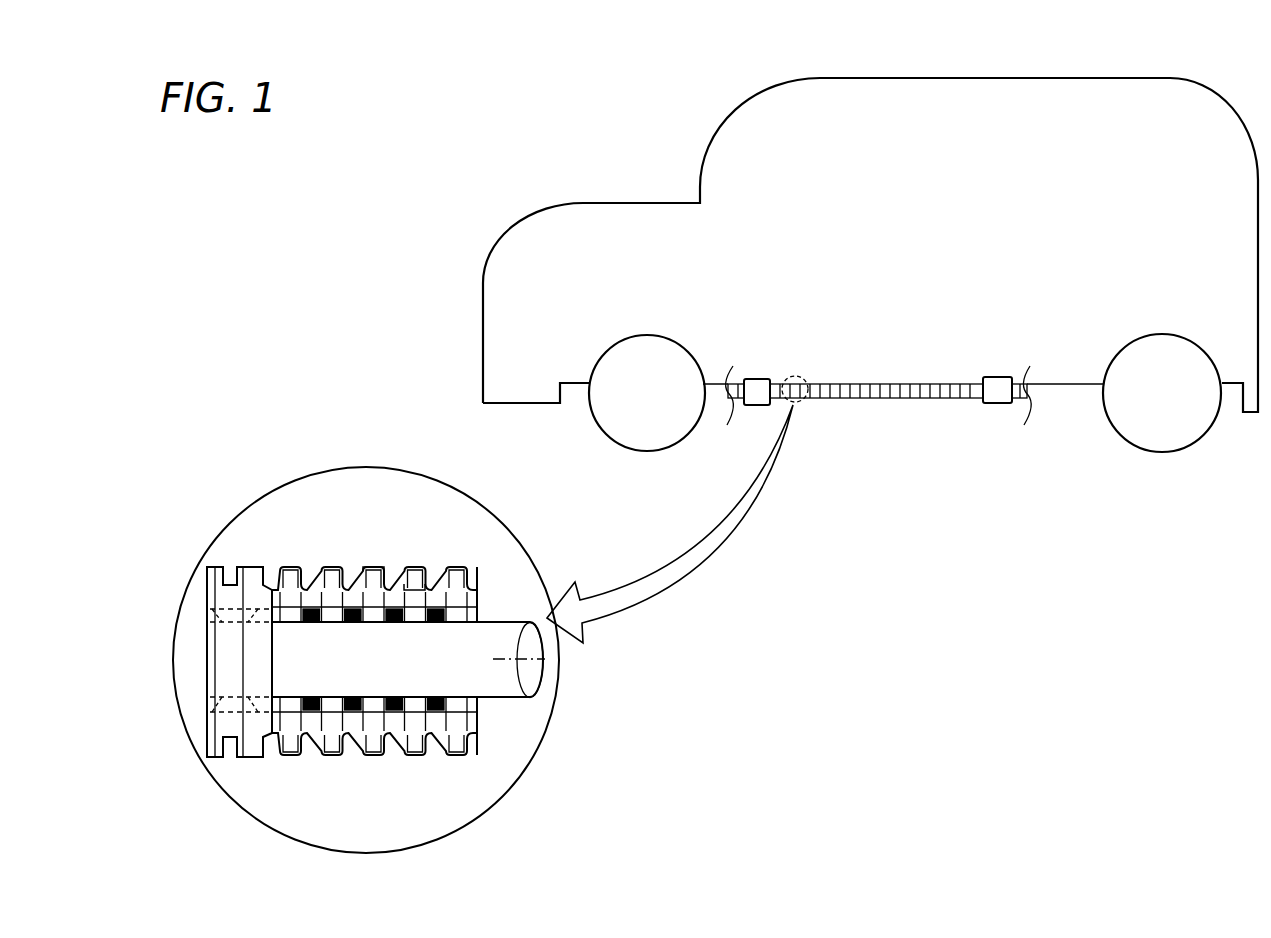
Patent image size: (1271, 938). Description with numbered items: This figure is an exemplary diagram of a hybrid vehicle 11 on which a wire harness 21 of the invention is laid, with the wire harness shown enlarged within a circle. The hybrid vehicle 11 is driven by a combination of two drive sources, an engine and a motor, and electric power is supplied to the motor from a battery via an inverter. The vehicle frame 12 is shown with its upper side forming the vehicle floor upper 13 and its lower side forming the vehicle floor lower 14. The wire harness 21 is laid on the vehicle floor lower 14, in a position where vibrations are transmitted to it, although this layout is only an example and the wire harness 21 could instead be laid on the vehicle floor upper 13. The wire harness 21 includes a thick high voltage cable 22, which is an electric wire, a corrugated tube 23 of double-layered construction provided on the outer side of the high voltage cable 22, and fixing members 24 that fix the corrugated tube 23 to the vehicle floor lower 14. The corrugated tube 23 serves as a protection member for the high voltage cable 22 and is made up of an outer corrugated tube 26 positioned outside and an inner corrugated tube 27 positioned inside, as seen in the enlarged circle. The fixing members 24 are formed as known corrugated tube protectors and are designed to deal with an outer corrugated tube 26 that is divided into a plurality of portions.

The hybrid vehicle 11 is at (580, 197).
The vehicle frame 12 is at (1078, 383).
The vehicle floor upper 13 is at (1050, 378).
The vehicle floor lower 14 is at (1057, 392).
The wire harness 21 is at (875, 404).
The high voltage cable 22 is at (520, 706).
The corrugated tube 23 is at (922, 398).
The fixing members 24 is at (755, 387).
The outer corrugated tube 26 is at (378, 565).
The inner corrugated tube 27 is at (416, 565).